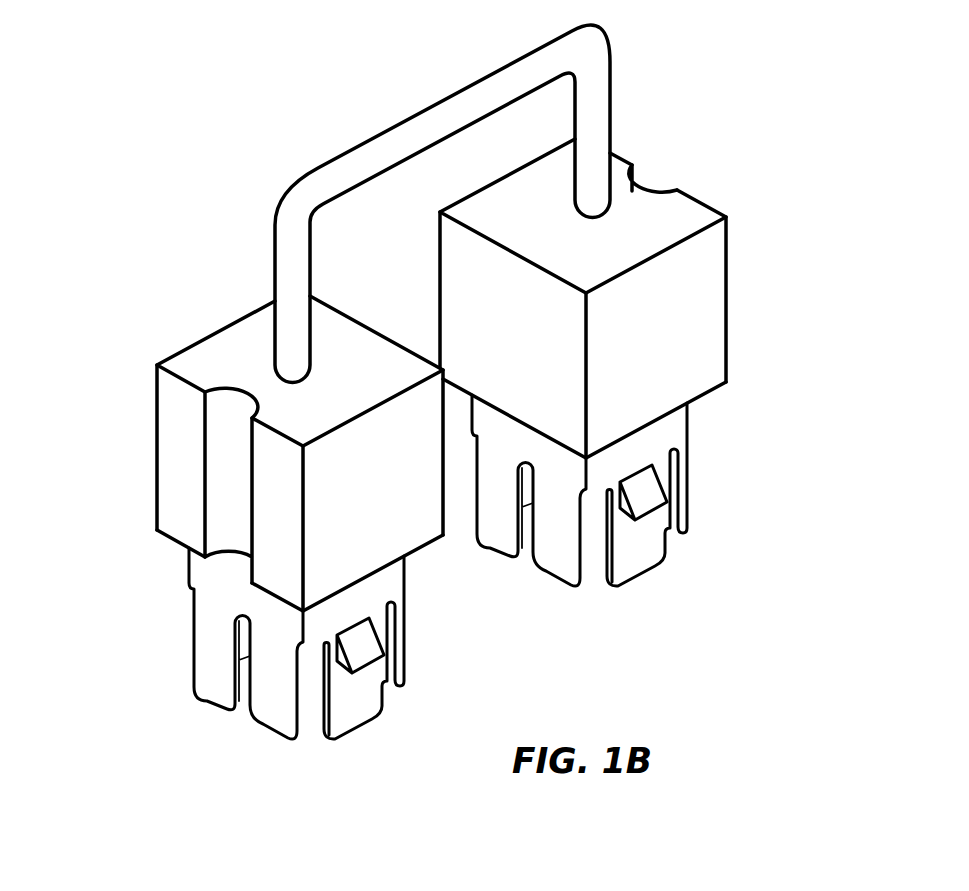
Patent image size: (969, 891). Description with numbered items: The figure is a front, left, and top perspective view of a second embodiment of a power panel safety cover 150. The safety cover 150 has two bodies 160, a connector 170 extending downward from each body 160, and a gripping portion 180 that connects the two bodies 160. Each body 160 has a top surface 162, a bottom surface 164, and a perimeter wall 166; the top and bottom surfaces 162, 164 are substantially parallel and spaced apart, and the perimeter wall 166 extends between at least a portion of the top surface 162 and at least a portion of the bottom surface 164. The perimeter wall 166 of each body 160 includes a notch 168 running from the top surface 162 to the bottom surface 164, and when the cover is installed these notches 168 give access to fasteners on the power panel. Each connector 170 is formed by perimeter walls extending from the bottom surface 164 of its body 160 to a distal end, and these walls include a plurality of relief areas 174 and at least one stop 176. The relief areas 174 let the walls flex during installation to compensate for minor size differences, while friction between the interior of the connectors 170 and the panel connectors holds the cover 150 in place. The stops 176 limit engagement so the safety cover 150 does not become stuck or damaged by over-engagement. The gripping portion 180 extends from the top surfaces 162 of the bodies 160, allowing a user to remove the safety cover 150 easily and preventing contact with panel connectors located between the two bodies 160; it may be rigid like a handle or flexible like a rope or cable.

The power panel safety cover 150 is at (422, 417).
The body 160 is at (422, 466).
The top surface 162 is at (664, 210).
The bottom surface 164 is at (705, 393).
The perimeter wall 166 is at (694, 289).
The notch 168 is at (668, 165).
The connector 170 is at (400, 602).
The relief area 174 is at (236, 724).
The stop 176 is at (651, 508).
The gripping portion 180 is at (274, 249).